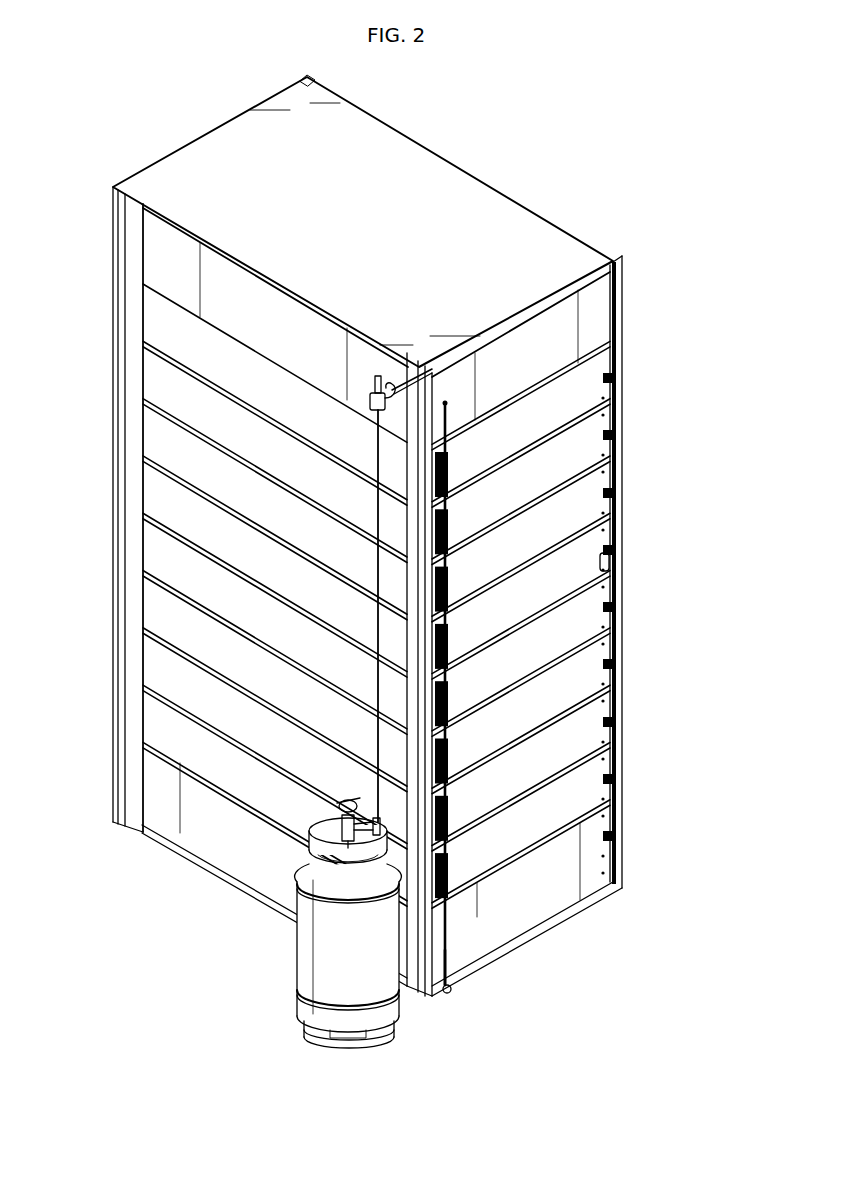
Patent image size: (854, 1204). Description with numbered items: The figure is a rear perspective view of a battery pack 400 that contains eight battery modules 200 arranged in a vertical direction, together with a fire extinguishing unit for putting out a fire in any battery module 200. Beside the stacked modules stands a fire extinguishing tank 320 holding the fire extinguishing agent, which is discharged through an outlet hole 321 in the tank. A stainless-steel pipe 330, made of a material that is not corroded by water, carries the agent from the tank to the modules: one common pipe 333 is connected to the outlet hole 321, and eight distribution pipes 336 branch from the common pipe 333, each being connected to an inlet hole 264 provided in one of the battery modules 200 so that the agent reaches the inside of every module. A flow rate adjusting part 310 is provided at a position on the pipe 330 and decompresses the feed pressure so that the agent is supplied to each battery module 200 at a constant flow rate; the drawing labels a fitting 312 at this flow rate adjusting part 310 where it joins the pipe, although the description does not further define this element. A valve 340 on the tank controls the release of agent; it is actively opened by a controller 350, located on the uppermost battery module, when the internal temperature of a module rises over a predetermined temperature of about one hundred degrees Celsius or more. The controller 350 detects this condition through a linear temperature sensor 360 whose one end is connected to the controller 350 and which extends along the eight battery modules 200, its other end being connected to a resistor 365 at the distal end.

The battery module 200 is at (152, 320).
The inlet hole 264 is at (610, 556).
The flow rate adjusting part 310 is at (390, 288).
The valve 312 is at (377, 380).
The fire extinguishing tank 320 is at (288, 957).
The outlet hole 321 is at (320, 844).
The pipe 330 is at (683, 383).
The common pipe 333 is at (378, 455).
The distribution pipe 336 is at (612, 443).
The valve 340 is at (308, 821).
The controller 350 is at (152, 254).
The temperature sensor 360 is at (447, 950).
The resistor 365 is at (449, 993).
The battery pack 400 is at (600, 232).